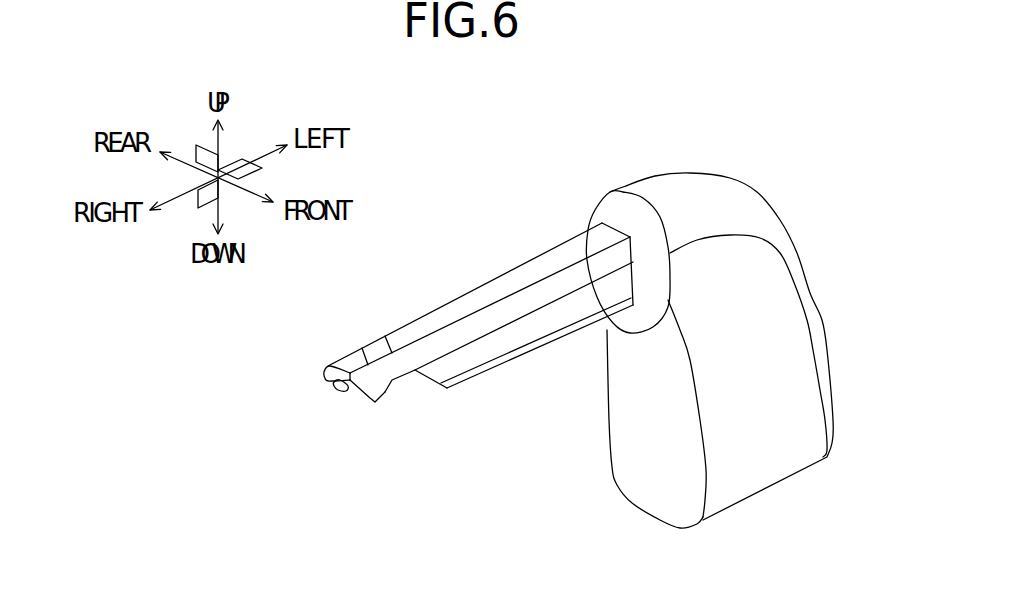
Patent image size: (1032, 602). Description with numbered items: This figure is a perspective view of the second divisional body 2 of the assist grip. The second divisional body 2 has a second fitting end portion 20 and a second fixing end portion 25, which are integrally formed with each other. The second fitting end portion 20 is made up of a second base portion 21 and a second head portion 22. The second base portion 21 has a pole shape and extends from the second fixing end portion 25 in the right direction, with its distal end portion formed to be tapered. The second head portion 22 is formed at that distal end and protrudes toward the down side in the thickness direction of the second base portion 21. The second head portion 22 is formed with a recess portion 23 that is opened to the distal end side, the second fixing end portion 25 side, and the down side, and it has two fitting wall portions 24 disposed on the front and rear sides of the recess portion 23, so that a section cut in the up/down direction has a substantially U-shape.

The second divisional body 2 is at (739, 327).
The second fitting end portion 20 is at (444, 339).
The second base portion 21 is at (430, 320).
The second head portion 22 is at (380, 405).
The recess portion 23 is at (355, 397).
The fitting wall portion 24 is at (328, 382).
The second fixing end portion 25 is at (820, 317).